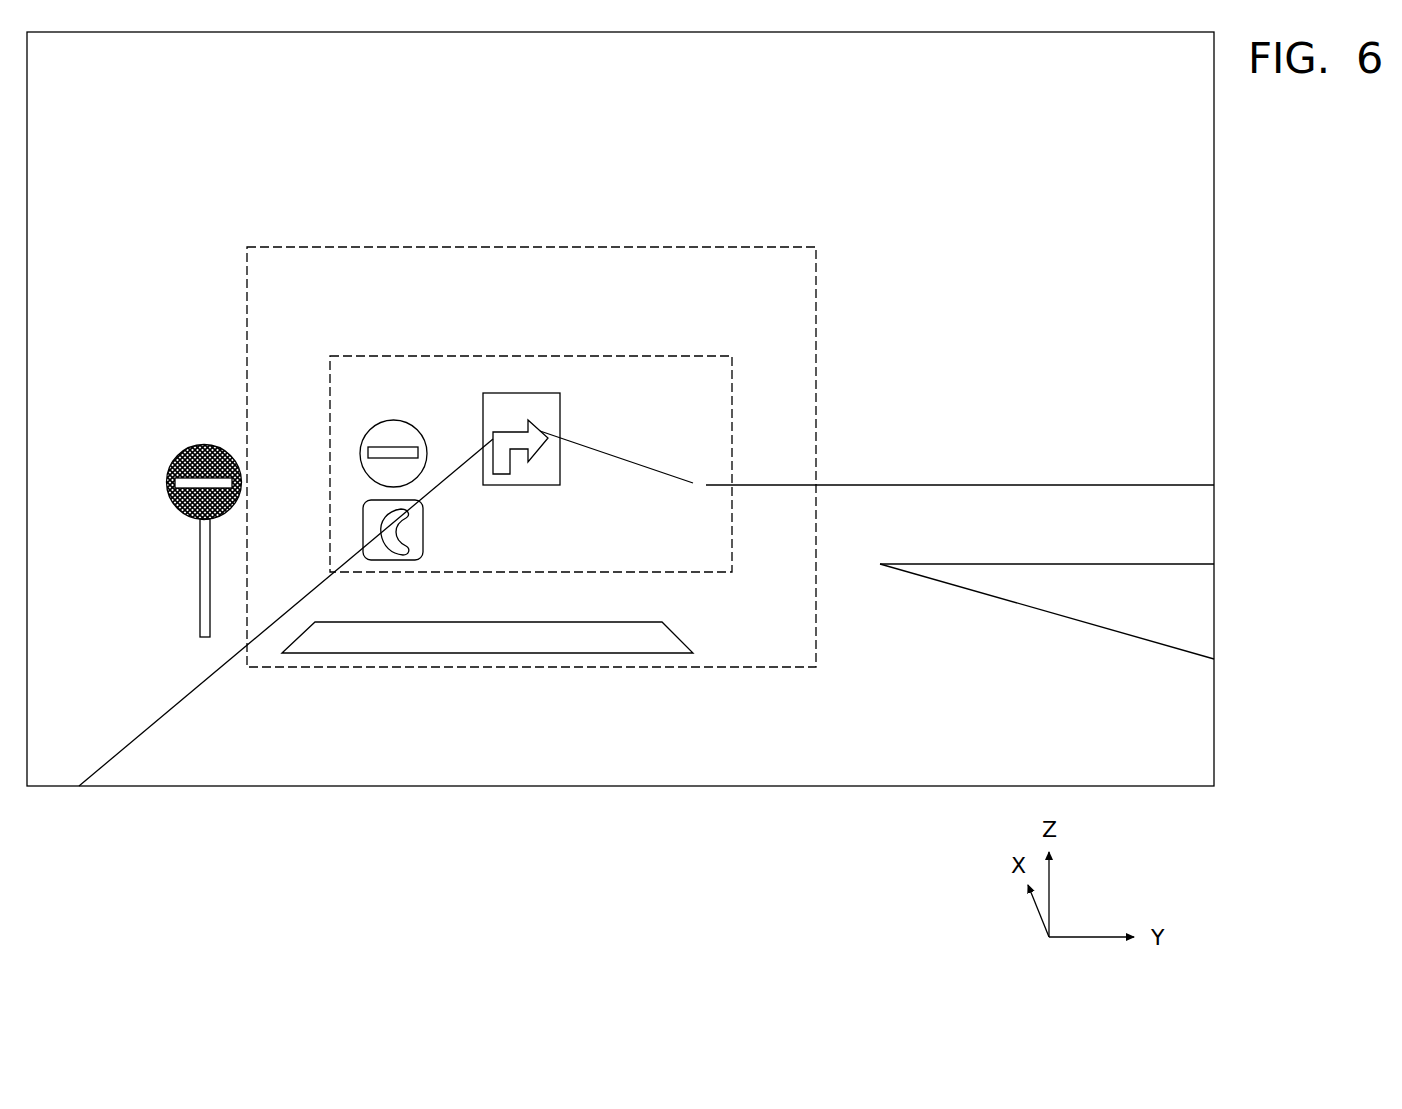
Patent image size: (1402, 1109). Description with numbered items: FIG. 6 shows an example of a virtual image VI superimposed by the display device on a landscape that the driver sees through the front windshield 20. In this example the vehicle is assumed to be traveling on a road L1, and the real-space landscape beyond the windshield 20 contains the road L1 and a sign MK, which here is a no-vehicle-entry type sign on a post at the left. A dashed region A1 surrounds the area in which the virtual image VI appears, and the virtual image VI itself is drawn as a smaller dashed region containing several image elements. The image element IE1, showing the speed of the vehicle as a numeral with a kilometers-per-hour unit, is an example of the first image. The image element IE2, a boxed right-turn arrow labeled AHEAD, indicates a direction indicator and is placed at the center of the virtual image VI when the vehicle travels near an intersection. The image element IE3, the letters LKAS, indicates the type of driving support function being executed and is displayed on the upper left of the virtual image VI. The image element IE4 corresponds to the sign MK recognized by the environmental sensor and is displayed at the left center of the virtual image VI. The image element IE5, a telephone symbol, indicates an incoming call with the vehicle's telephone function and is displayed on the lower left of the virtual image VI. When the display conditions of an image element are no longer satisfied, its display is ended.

The front windshield 20 is at (183, 122).
The display area A1 is at (754, 247).
The virtual image VI is at (691, 356).
The image element IE1 is at (687, 470).
The image element IE2 is at (521, 393).
The image element IE3 is at (395, 360).
The image element IE4 is at (360, 452).
The image element IE5 is at (363, 526).
The sign MK is at (205, 445).
The road L1 is at (650, 762).